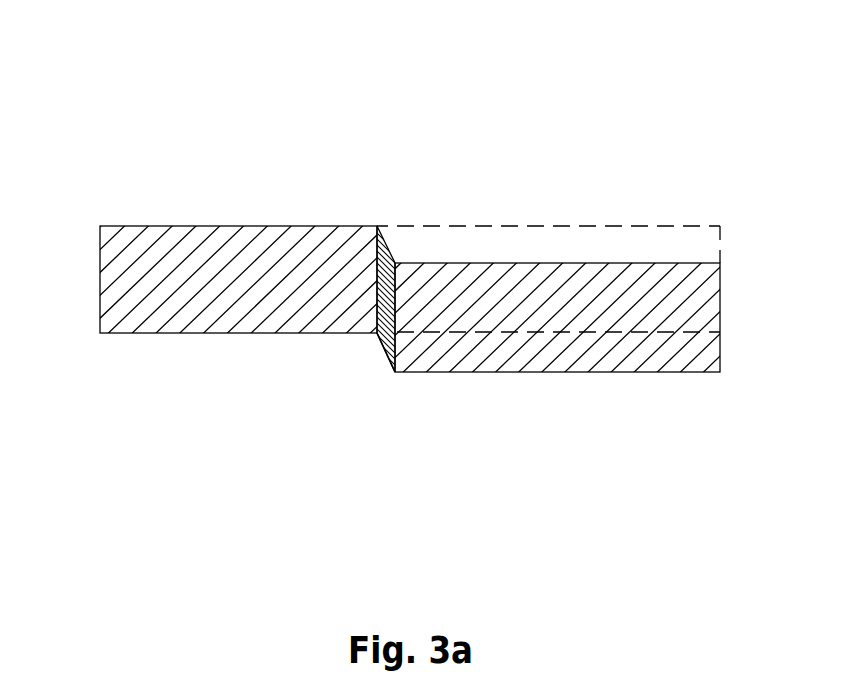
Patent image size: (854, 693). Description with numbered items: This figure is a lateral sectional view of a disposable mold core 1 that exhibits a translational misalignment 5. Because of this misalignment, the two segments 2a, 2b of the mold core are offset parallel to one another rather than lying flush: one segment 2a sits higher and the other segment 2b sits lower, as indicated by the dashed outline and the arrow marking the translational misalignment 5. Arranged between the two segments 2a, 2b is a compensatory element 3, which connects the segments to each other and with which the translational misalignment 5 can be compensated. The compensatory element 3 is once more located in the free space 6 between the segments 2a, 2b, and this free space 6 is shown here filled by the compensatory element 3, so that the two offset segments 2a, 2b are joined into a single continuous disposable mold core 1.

The disposable mold core 1 is at (278, 122).
The segment 2a is at (180, 270).
The segment 2b is at (573, 293).
The compensatory element 3 is at (388, 247).
The translational misalignment 5 is at (742, 254).
The free space 6 is at (371, 372).